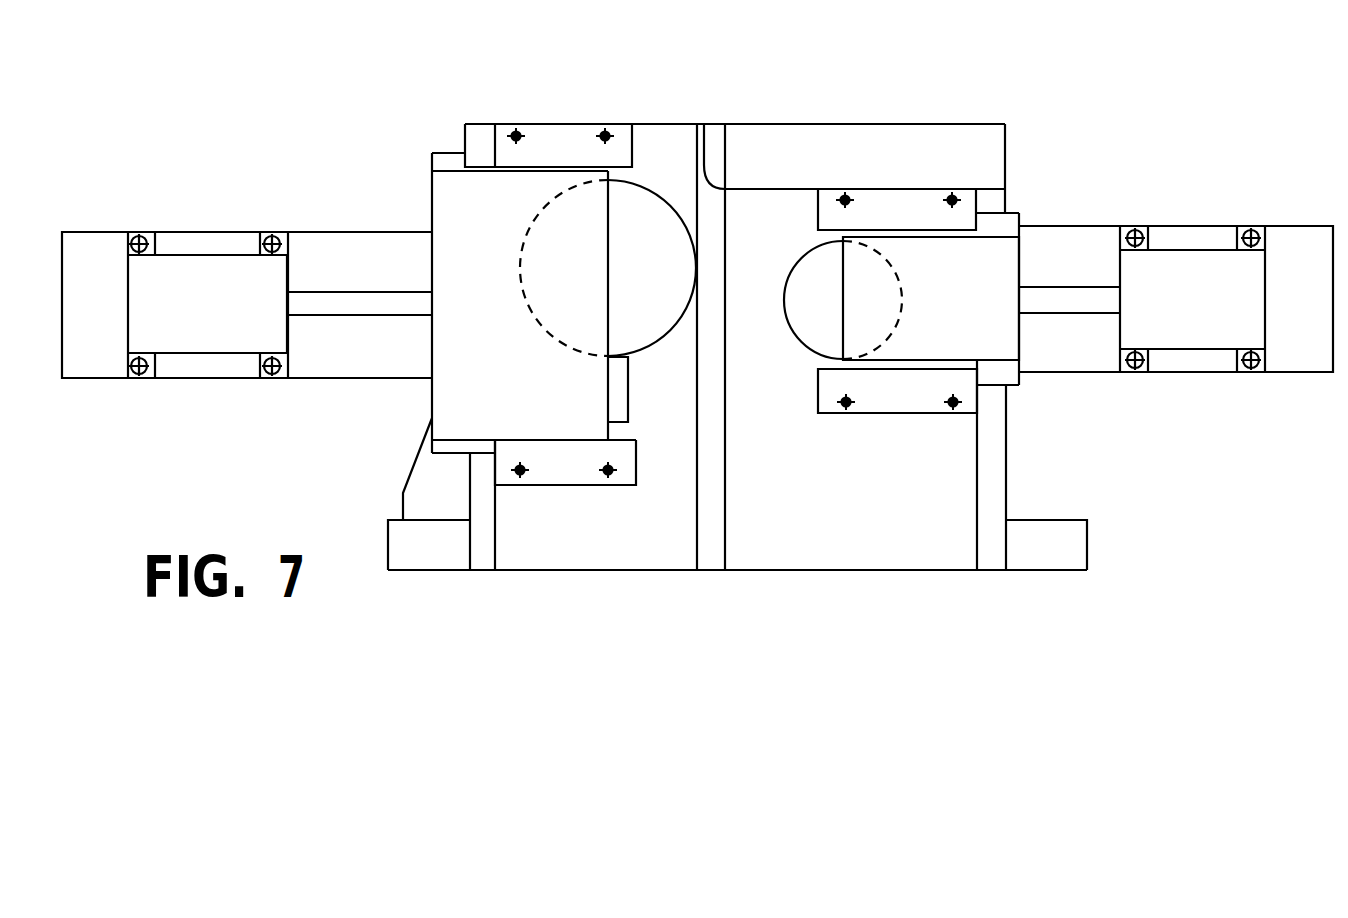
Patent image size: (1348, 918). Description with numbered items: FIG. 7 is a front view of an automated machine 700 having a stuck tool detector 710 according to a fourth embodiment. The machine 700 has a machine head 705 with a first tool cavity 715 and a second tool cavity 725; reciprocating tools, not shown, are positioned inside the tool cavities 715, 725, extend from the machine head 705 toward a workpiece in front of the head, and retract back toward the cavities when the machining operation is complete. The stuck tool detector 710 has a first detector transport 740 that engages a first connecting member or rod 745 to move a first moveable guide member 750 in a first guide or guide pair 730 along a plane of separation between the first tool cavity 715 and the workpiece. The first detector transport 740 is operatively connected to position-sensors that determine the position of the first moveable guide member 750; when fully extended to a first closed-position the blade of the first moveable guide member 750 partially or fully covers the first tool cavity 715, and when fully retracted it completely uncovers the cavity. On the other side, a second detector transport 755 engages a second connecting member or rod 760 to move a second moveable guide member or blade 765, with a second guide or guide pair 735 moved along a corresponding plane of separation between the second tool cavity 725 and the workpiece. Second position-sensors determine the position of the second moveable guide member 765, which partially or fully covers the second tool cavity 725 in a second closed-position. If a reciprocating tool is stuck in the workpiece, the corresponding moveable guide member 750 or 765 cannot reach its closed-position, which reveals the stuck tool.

The automated machine 700 is at (1102, 34).
The machine head 705 is at (793, 525).
The stuck tool detector 710 is at (203, 379).
The first tool cavity 715 is at (636, 205).
The second tool cavity 725 is at (803, 290).
The first guide or guide pair 730 is at (555, 145).
The second guide or guide pair 735 is at (897, 205).
The first detector transport 740 is at (203, 282).
The first connecting member or rod 745 is at (348, 302).
The first moveable guide member 750 is at (452, 210).
The second detector transport 755 is at (1208, 282).
The second connecting member or rod 760 is at (1077, 300).
The second moveable guide member or blade 765 is at (980, 271).